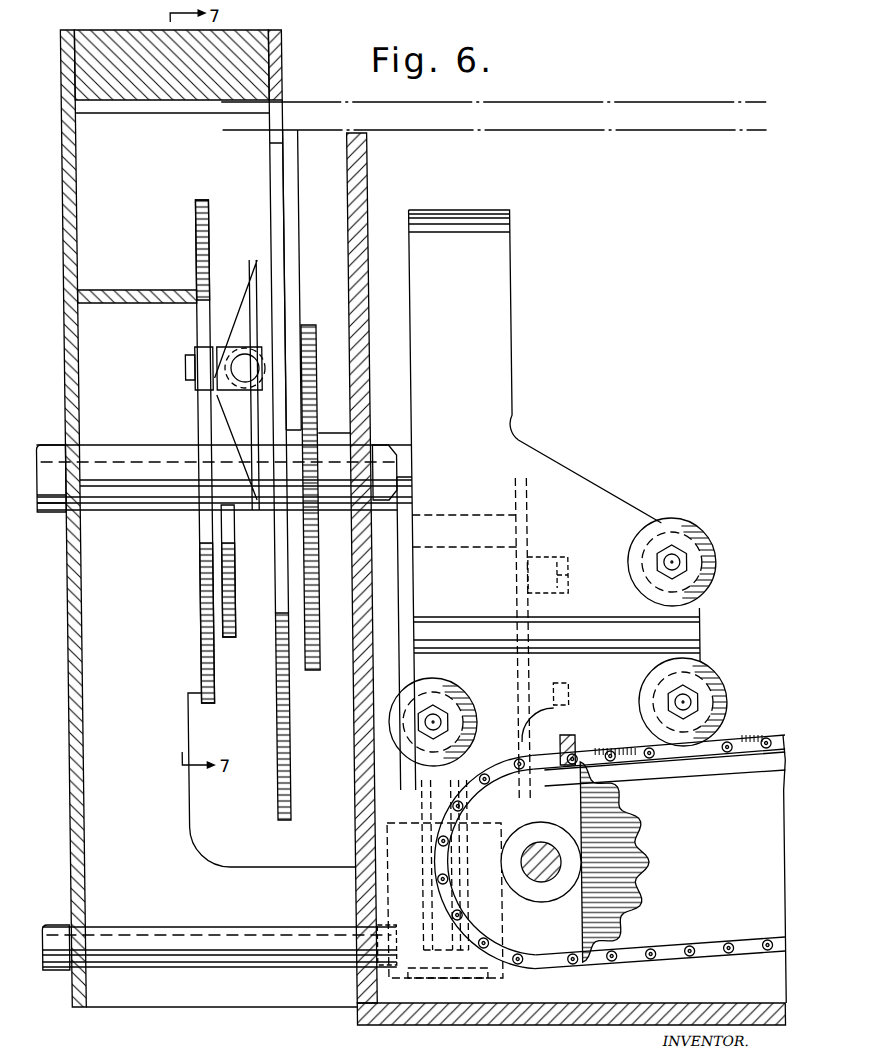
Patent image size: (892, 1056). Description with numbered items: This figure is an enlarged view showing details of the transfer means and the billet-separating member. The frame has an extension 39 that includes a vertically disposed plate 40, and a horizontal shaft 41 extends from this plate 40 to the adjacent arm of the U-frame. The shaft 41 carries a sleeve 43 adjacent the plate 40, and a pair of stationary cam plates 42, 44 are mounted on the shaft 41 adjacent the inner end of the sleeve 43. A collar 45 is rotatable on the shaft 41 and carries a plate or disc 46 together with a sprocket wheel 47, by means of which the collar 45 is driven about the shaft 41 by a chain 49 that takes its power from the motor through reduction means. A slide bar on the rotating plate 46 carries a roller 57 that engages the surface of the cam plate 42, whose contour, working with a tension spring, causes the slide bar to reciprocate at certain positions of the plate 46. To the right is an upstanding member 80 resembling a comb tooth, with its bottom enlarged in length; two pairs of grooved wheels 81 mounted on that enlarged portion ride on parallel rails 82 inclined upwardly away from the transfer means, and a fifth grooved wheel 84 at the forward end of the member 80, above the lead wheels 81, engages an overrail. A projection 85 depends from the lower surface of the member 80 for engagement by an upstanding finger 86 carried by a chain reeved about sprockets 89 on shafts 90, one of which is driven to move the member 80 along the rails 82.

The extension 39 is at (190, 1013).
The vertically disposed plate 40 is at (60, 760).
The horizontal shaft 41 is at (102, 467).
The cam plate 42 is at (192, 652).
The sleeve 43 is at (148, 447).
The cam plate 44 is at (219, 641).
The collar 45 is at (256, 520).
The plate or disc 46 is at (268, 718).
The sprocket wheel 47 is at (314, 392).
The chain 49 is at (298, 324).
The roller 57 is at (191, 348).
The upstanding member 80 is at (475, 351).
The grooved wheels 81 is at (720, 692).
The rails 82 is at (751, 728).
The fifth grooved wheel 84 is at (705, 538).
The projection 85 is at (569, 737).
The upstanding finger 86 is at (553, 758).
The sprockets 89 is at (609, 910).
The shafts 90 is at (551, 862).